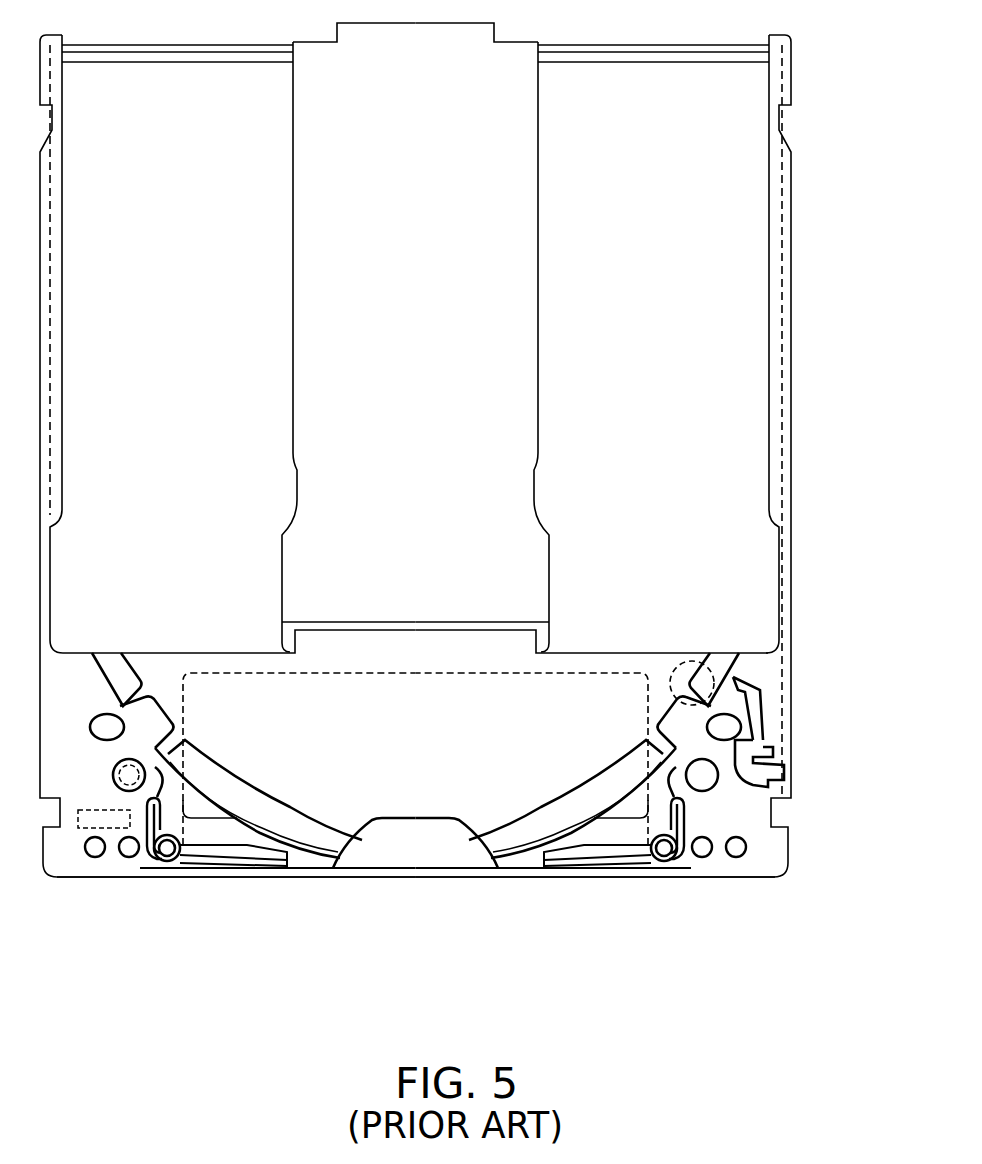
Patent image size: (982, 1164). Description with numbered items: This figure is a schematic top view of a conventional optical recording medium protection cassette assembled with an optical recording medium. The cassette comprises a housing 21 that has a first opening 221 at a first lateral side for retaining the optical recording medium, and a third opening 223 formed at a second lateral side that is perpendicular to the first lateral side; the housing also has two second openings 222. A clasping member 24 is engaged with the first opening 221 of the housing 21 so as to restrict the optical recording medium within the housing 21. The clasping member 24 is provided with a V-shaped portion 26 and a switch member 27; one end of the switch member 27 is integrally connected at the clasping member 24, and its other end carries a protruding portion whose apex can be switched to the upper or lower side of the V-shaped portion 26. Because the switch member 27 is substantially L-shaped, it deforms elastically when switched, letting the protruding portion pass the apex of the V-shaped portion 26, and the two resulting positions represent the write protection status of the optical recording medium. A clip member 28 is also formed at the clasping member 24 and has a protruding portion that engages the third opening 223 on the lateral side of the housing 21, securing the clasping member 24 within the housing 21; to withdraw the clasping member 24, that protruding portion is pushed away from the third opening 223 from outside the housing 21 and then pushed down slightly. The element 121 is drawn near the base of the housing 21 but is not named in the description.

The housing 21 is at (740, 320).
The clip member 28 is at (763, 712).
The third opening 223 is at (787, 768).
The V-shaped portion 26 is at (137, 808).
The second openings 222 is at (146, 858).
The switch member 27 is at (240, 850).
The first opening 221 is at (317, 878).
The clasping member 24 is at (415, 857).
The bottom plate 121 is at (515, 877).